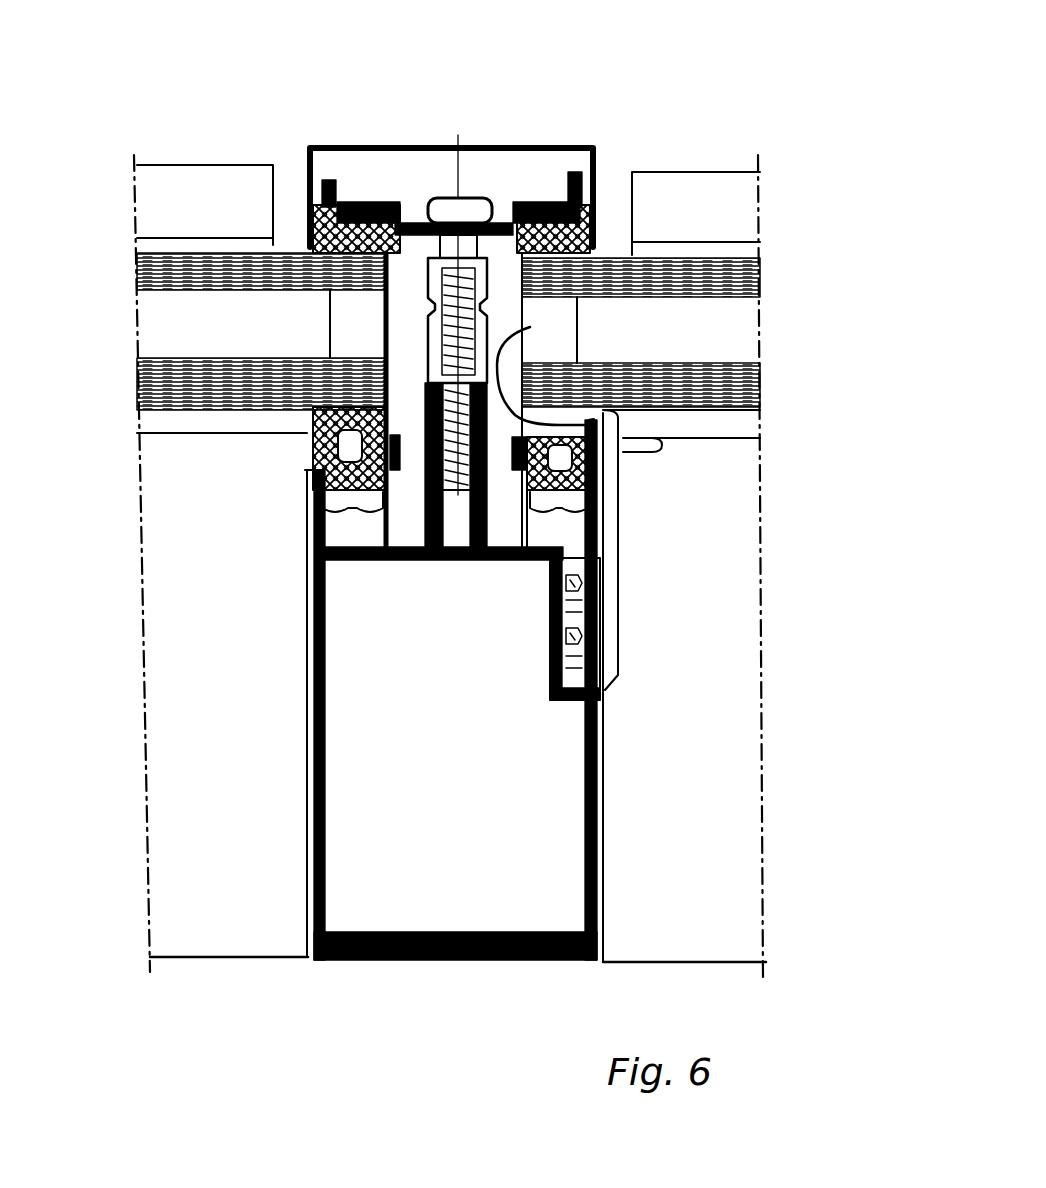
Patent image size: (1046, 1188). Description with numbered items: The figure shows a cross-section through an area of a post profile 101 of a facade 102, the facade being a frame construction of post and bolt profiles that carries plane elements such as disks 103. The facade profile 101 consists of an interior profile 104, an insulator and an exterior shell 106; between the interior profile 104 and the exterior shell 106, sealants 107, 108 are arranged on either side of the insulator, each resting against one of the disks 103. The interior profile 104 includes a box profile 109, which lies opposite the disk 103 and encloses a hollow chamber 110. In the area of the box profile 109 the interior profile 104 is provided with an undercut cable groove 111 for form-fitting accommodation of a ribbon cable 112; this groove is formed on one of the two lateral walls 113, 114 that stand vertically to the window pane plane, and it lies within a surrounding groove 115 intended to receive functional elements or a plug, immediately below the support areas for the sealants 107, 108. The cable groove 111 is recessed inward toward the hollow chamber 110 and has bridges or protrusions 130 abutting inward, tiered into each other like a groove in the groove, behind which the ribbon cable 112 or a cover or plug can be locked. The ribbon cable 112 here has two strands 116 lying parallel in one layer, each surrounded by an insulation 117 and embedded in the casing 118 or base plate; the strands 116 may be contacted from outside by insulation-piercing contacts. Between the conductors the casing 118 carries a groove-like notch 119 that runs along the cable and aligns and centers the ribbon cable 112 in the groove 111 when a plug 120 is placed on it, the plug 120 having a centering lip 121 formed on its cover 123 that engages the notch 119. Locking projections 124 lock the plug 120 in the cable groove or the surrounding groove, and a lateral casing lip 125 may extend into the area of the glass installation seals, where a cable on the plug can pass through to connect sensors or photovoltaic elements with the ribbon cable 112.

The post profile 101 is at (479, 177).
The facade 102 is at (778, 150).
The disks 103 is at (165, 255).
The interior profile 104 is at (318, 974).
The exterior shell 106 is at (363, 186).
The sealant 107 is at (312, 417).
The sealant 108 is at (600, 247).
The box profile 109 is at (615, 832).
The hollow chamber 110 is at (472, 897).
The cable groove 111 is at (583, 705).
The ribbon cable 112 is at (757, 573).
The lateral wall 113 is at (603, 893).
The lateral wall 114 is at (307, 847).
The surrounding groove 115 is at (502, 307).
The strands 116 is at (485, 642).
The insulation 117 is at (590, 430).
The casing 118 is at (550, 583).
The notch 119 is at (550, 637).
The plug 120 is at (757, 673).
The centering lip 121 is at (605, 632).
The cover 123 is at (632, 498).
The locking projections 124 is at (600, 530).
The lateral casing lip 125 is at (605, 450).
The protrusions 130 is at (600, 567).